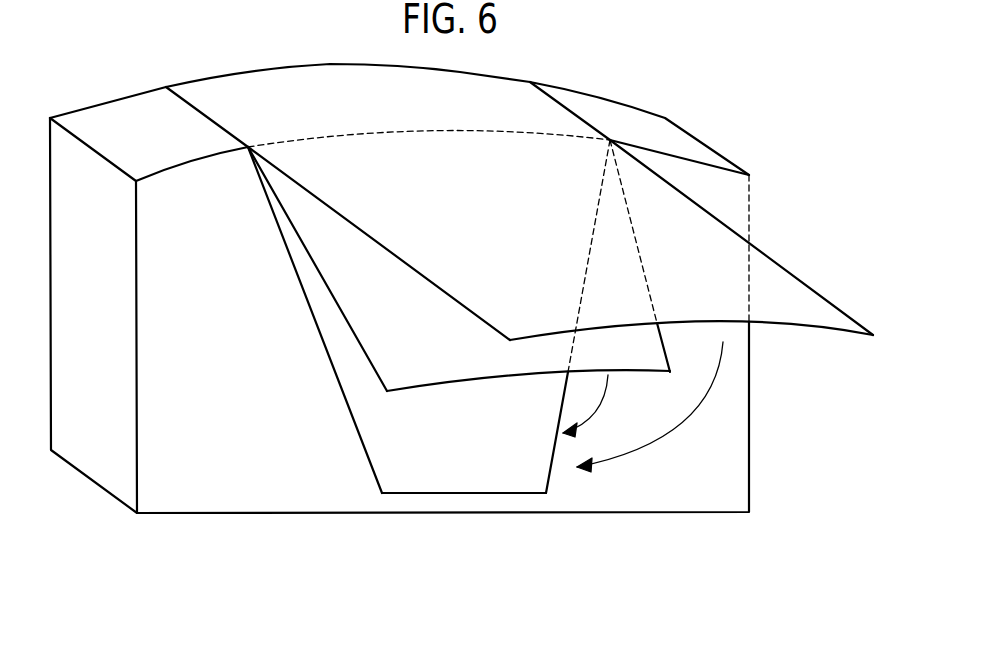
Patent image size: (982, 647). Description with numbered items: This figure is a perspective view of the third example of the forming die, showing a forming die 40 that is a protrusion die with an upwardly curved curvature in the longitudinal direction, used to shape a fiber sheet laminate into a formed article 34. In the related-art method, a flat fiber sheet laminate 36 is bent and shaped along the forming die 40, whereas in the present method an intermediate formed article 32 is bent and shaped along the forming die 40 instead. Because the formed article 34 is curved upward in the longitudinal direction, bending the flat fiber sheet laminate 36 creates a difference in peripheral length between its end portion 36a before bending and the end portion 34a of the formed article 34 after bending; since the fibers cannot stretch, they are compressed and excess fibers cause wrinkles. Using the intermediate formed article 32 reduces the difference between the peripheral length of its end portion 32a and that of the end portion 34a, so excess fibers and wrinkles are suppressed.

The forming die 40 is at (682, 142).
The intermediate formed article 32 is at (362, 315).
The end portion of the intermediate formed article 32a is at (475, 377).
The formed article 34 is at (383, 457).
The end portion of the formed article 34a is at (448, 493).
The flat fiber sheet laminate 36 is at (791, 293).
The end portion of the fiber sheet laminate 36a is at (812, 325).